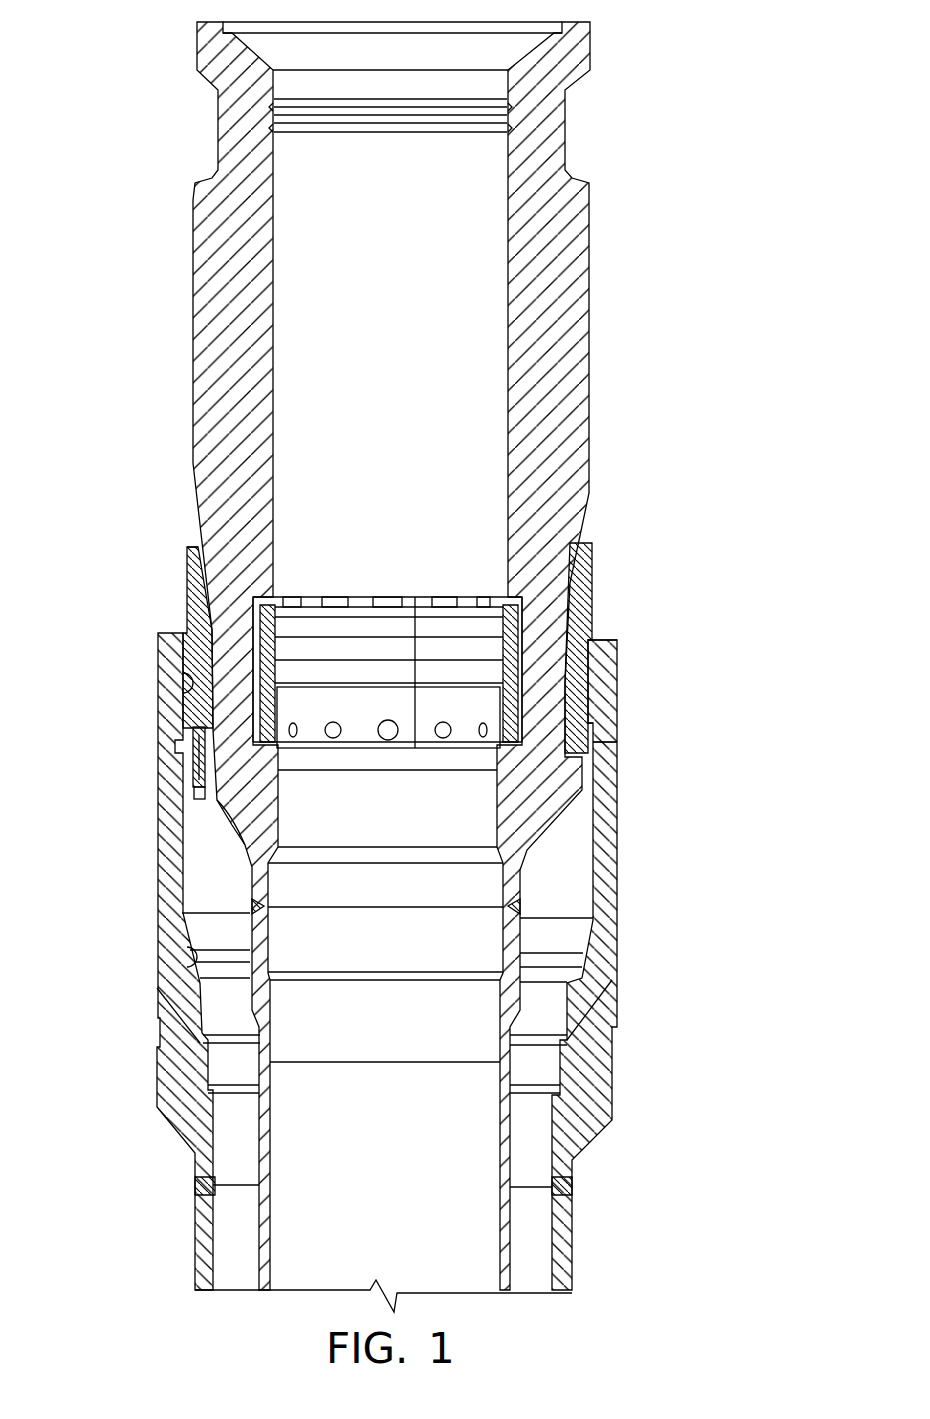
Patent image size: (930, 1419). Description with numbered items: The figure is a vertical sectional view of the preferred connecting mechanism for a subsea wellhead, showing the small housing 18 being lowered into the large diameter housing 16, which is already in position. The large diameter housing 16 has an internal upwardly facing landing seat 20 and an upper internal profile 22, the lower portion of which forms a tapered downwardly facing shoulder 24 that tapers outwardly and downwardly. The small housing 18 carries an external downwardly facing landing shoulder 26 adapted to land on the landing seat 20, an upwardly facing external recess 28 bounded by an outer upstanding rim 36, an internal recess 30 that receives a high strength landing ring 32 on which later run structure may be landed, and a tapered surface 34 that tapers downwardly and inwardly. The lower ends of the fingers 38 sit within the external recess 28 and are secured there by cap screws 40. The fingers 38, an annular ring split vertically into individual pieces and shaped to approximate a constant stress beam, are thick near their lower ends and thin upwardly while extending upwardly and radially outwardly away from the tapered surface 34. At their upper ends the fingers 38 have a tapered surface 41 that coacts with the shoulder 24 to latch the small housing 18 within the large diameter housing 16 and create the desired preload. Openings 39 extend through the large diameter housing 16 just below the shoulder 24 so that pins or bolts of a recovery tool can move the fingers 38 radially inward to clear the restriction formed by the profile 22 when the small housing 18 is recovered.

The large diameter housing 16 is at (613, 1093).
The small housing 18 is at (583, 406).
The landing seat 20 is at (188, 952).
The upper internal profile 22 is at (190, 678).
The tapered downwardly facing shoulder 24 is at (193, 745).
The landing shoulder 26 is at (215, 808).
The external recess 28 is at (617, 653).
The internal recess 30 is at (276, 600).
The landing ring 32 is at (278, 702).
The tapered surface 34 is at (570, 592).
The outer upstanding rim 36 is at (588, 710).
The fingers 38 is at (185, 580).
The openings 39 is at (600, 742).
The cap screws 40 is at (205, 800).
The tapered surface 41 is at (185, 545).